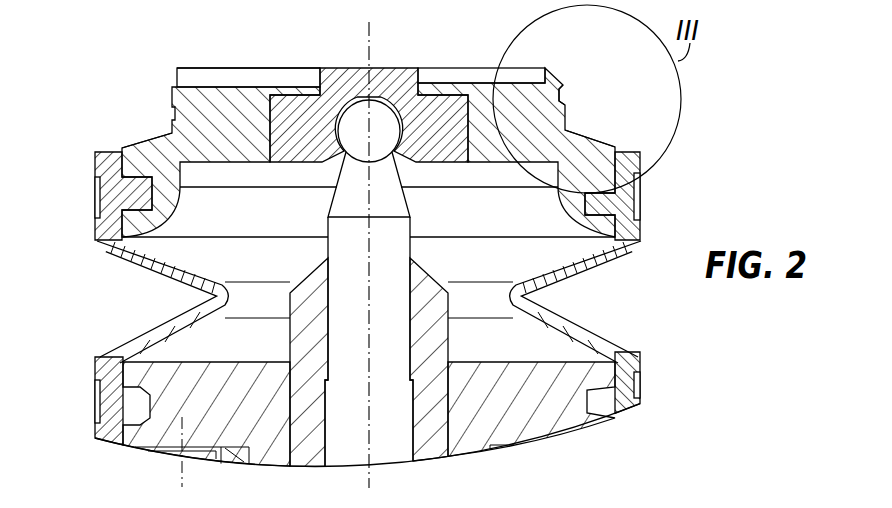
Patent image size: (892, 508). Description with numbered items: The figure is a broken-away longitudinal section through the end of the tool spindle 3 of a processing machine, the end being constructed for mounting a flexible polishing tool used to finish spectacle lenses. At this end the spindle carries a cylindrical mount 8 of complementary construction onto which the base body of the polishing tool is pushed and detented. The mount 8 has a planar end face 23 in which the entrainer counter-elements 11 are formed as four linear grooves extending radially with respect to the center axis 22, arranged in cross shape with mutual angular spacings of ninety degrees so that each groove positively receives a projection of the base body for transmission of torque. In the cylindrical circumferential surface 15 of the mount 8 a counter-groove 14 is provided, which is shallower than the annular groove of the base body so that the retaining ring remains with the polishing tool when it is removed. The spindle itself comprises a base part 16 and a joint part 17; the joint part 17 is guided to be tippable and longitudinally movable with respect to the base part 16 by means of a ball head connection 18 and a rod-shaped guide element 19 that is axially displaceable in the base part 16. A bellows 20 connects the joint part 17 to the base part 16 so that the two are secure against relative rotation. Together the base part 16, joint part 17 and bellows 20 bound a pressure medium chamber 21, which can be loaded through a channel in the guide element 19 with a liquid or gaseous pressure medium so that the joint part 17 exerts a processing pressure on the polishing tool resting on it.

The tool spindle 3 is at (100, 252).
The cylindrical mount 8 is at (172, 120).
The entrainer counter-elements 11 is at (249, 77).
The counter-groove 14 is at (560, 95).
The cylindrical circumferential surface 15 is at (567, 122).
The base part 16 is at (560, 420).
The joint part 17 is at (142, 137).
The ball head connection 18 is at (404, 146).
The rod-shaped guide element 19 is at (350, 240).
The bellows 20 is at (180, 273).
The pressure medium chamber 21 is at (500, 271).
The center axis 22 is at (370, 60).
The planar end face 23 is at (278, 66).